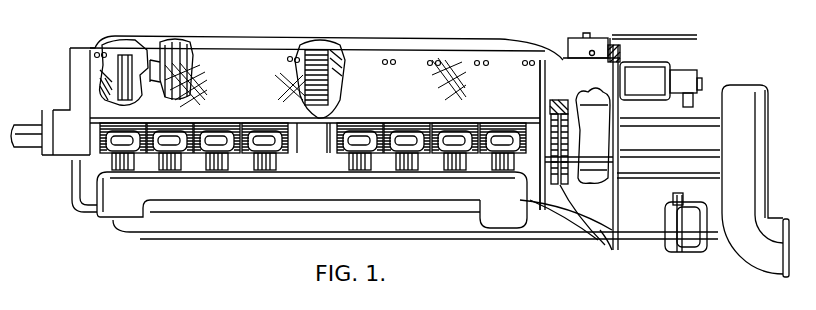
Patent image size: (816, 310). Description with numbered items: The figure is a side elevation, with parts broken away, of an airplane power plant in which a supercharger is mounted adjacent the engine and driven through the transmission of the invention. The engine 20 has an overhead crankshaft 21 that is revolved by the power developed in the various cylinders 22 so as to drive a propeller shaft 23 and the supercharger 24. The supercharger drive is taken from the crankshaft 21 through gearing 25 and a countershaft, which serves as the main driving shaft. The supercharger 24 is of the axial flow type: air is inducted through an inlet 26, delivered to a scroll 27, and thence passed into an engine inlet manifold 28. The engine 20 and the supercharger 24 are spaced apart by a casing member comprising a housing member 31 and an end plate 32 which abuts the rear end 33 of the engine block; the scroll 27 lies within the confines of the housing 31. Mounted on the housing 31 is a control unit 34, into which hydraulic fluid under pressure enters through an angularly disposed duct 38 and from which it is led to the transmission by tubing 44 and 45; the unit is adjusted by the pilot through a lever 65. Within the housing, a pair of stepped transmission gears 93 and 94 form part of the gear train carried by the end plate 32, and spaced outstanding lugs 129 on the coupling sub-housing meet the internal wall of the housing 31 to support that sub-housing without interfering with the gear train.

The engine 20 is at (267, 70).
The overhead crankshaft 21 is at (137, 45).
The cylinders 22 is at (408, 133).
The propeller shaft 23 is at (18, 132).
The supercharger 24 is at (672, 130).
The gearing 25 is at (323, 50).
The inlet 26 is at (750, 143).
The scroll 27 is at (603, 137).
The engine inlet manifold 28 is at (633, 248).
The housing member 31 is at (603, 250).
The end plate 32 is at (545, 241).
The rear end of the engine block 33 is at (540, 100).
The control unit 34 is at (568, 43).
The angularly disposed duct 38 is at (592, 50).
The tubing 44 is at (619, 50).
The tubing 45 is at (637, 63).
The lever 65 is at (618, 33).
The stepped transmission gear 93 is at (560, 100).
The stepped transmission gear 94 is at (582, 218).
The lugs 129 is at (590, 247).